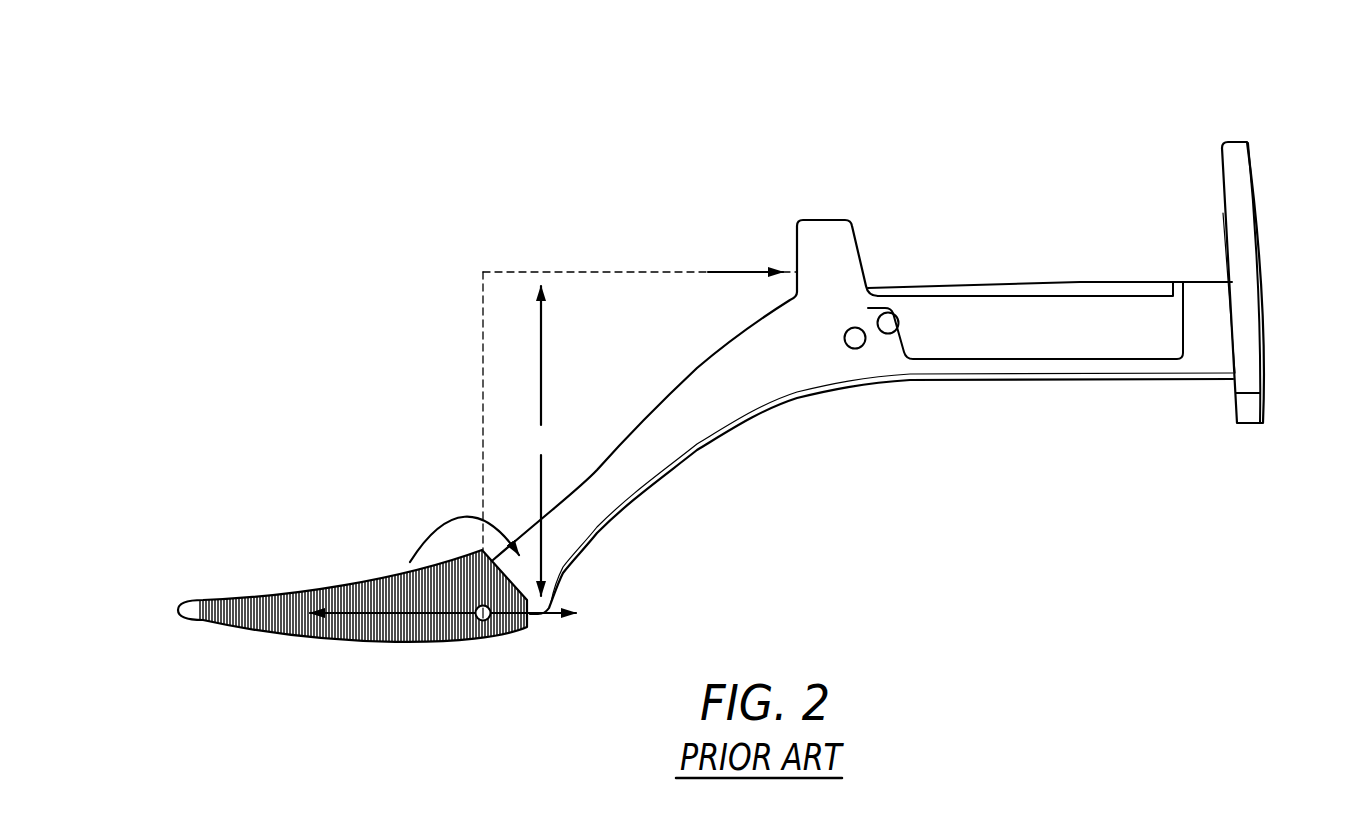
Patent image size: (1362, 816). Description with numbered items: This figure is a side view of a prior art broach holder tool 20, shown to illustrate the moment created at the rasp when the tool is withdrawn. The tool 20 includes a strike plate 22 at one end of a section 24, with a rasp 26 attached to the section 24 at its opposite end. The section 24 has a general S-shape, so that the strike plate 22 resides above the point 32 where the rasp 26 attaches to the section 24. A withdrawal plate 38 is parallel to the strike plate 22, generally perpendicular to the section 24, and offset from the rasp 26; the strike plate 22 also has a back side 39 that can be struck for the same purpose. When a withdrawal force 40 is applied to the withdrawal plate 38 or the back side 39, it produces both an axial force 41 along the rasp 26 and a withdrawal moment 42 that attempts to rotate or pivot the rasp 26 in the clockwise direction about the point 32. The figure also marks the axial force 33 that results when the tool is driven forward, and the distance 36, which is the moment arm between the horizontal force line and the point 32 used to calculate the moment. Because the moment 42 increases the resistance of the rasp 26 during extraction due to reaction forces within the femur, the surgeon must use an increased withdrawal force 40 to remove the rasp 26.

The broach holder tool 20 is at (641, 132).
The strike plate 22 is at (1253, 185).
The section 24 is at (1092, 376).
The rasp 26 is at (238, 605).
The point 32 is at (482, 627).
The axial force 33 is at (383, 600).
The distance 36 is at (640, 434).
The withdrawal plate 38 is at (825, 232).
The back side 39 is at (1216, 213).
The withdrawal force 40 is at (753, 272).
The axial force 41 is at (560, 622).
The withdrawal moment 42 is at (433, 522).